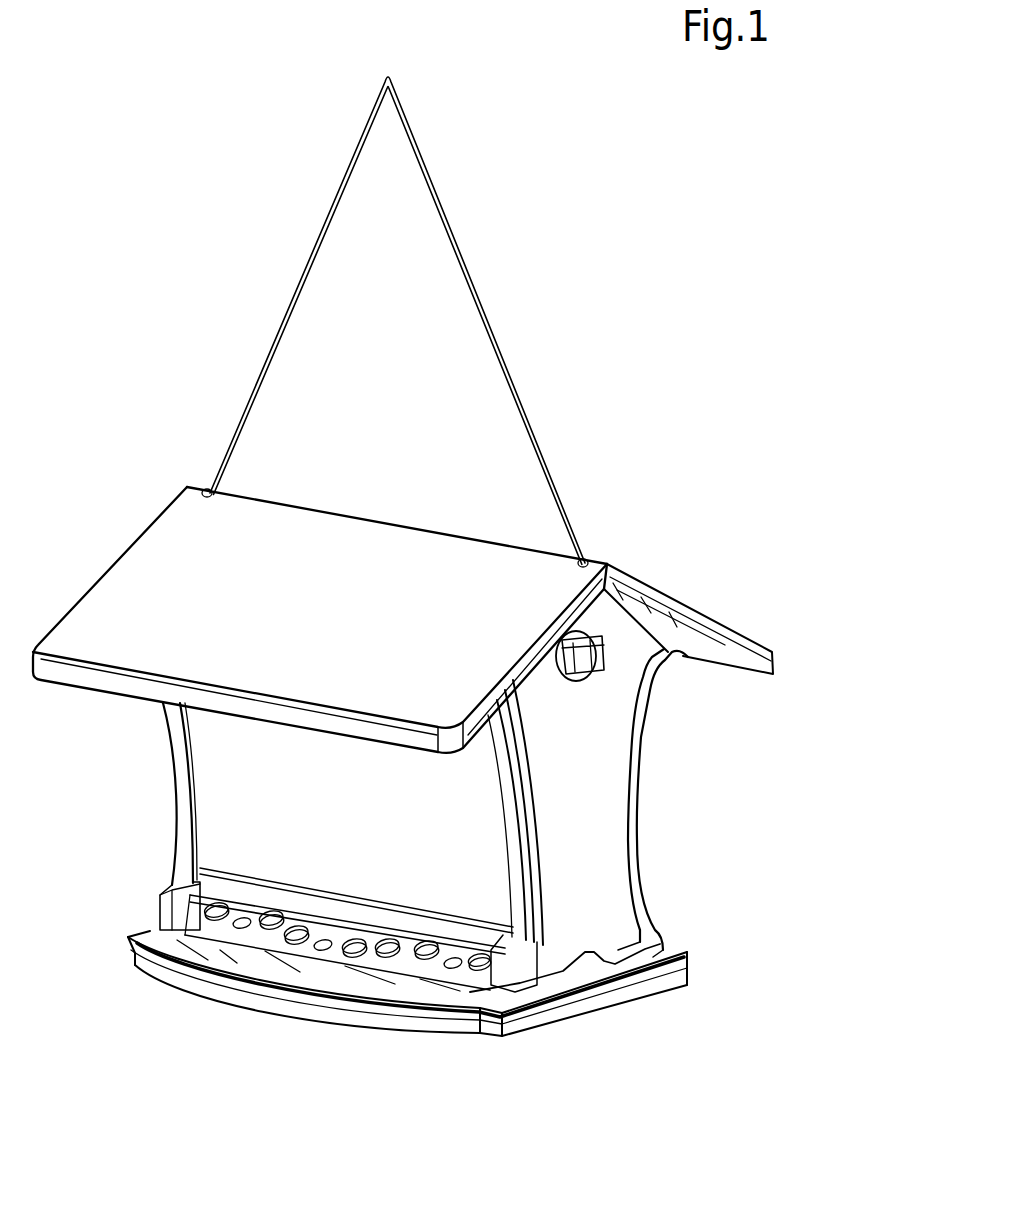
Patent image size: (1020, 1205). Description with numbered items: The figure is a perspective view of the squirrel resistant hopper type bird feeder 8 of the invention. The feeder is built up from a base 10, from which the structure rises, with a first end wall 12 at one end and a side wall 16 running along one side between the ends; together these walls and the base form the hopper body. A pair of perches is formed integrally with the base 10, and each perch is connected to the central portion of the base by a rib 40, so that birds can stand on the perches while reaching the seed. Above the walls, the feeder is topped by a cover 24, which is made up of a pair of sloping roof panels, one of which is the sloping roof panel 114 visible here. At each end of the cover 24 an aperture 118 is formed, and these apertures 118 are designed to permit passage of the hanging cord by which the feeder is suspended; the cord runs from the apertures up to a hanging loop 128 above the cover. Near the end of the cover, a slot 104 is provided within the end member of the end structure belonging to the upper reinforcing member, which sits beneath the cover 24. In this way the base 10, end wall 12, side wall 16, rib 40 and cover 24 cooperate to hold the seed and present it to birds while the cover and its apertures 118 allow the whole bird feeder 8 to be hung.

The bird feeder 8 is at (622, 336).
The base 10 is at (623, 1014).
The first end wall 12 is at (648, 839).
The side wall 16 is at (142, 790).
The cover 24 is at (644, 577).
The rib 40 is at (360, 922).
The slot 104 is at (586, 669).
The sloping roof panel 114 is at (390, 686).
The apertures 118 is at (190, 491).
The hanger wire 128 is at (505, 347).